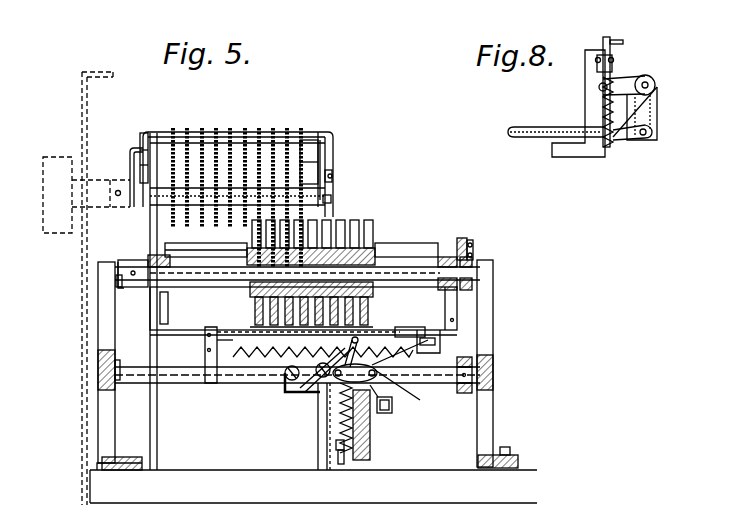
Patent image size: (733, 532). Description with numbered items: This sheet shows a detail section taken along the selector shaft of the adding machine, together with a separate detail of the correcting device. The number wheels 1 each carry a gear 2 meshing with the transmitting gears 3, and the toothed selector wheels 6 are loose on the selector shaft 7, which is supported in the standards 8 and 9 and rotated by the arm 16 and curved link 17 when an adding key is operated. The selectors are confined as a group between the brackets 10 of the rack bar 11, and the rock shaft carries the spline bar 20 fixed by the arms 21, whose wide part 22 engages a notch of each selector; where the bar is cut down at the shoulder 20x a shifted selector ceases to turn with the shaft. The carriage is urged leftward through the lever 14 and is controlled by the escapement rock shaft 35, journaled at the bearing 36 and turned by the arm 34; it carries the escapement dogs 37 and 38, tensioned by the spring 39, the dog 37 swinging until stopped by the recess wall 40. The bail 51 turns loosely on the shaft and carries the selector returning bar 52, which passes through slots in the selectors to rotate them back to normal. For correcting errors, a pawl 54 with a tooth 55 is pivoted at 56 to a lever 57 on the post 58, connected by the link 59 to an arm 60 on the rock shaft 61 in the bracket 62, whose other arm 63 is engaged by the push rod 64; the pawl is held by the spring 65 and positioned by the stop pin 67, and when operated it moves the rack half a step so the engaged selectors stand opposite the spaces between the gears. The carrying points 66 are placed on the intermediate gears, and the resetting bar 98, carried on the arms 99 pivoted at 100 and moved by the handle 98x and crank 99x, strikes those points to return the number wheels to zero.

In FIG. 5, the number wheels 1 is at (297, 132).
In FIG. 5, the gear 2 is at (306, 134).
In FIG. 5, the transmitting gears 3 is at (298, 200).
In FIG. 5, the selector wheels 6 is at (341, 222).
In FIG. 5, the selector shaft 7 is at (228, 276).
In FIG. 5, the standard 8 is at (494, 284).
In FIG. 5, the standard 9 is at (108, 312).
In FIG. 5, the brackets 10 is at (252, 300).
In FIG. 5, the rack bar 11 is at (300, 338).
In FIG. 5, the lever 14 is at (402, 372).
In FIG. 5, the arm 16 is at (471, 241).
In FIG. 5, the curved link 17 is at (460, 240).
In FIG. 5, the spline bar 20 is at (417, 327).
In FIG. 5, the shoulder 20x is at (308, 338).
In FIG. 5, the arms 21 is at (155, 312).
In FIG. 5, the wide part of spline bar 22 is at (438, 338).
In FIG. 5, the arm 34 is at (468, 394).
In FIG. 5, the escapement rock shaft 35 is at (250, 377).
In FIG. 5, the bearing 36 is at (100, 375).
In FIG. 5, the escapement dog 37 is at (323, 378).
In FIG. 5, the escapement dog 38 is at (290, 378).
In FIG. 5, the spring 39 is at (300, 390).
In FIG. 5, the recess wall 40 is at (330, 420).
In FIG. 5, the bail 51 is at (155, 258).
In FIG. 5, the selector returning bar 52 is at (240, 250).
In FIG. 5, the pawl 54 is at (358, 341).
In FIG. 8, the pawl 54 is at (612, 40).
In FIG. 8, the tooth 55 is at (623, 41).
In FIG. 5, the pivot 56 is at (371, 410).
In FIG. 5, the lever 57 is at (370, 371).
In FIG. 8, the lever 57 is at (597, 63).
In FIG. 8, the post 58 is at (592, 100).
In FIG. 5, the link 59 is at (396, 407).
In FIG. 5, the arm 60 is at (380, 413).
In FIG. 8, the arm 60 is at (625, 80).
In FIG. 8, the rock shaft 61 is at (652, 85).
In FIG. 8, the bracket 62 is at (630, 105).
In FIG. 5, the arm 63 is at (338, 445).
In FIG. 8, the arm 63 is at (655, 120).
In FIG. 5, the push rod 64 is at (342, 465).
In FIG. 8, the push rod 64 is at (540, 137).
In FIG. 5, the spring 65 is at (370, 445).
In FIG. 8, the spring 65 is at (613, 140).
In FIG. 5, the points 66 is at (216, 135).
In FIG. 5, the intermediate gear 67 is at (322, 426).
In FIG. 5, the resetting bar 98 is at (318, 132).
In FIG. 5, the handle 98x is at (43, 190).
In FIG. 5, the arms 99 is at (141, 143).
In FIG. 5, the crank 99x is at (130, 165).
In FIG. 5, the pivot 100 is at (332, 175).